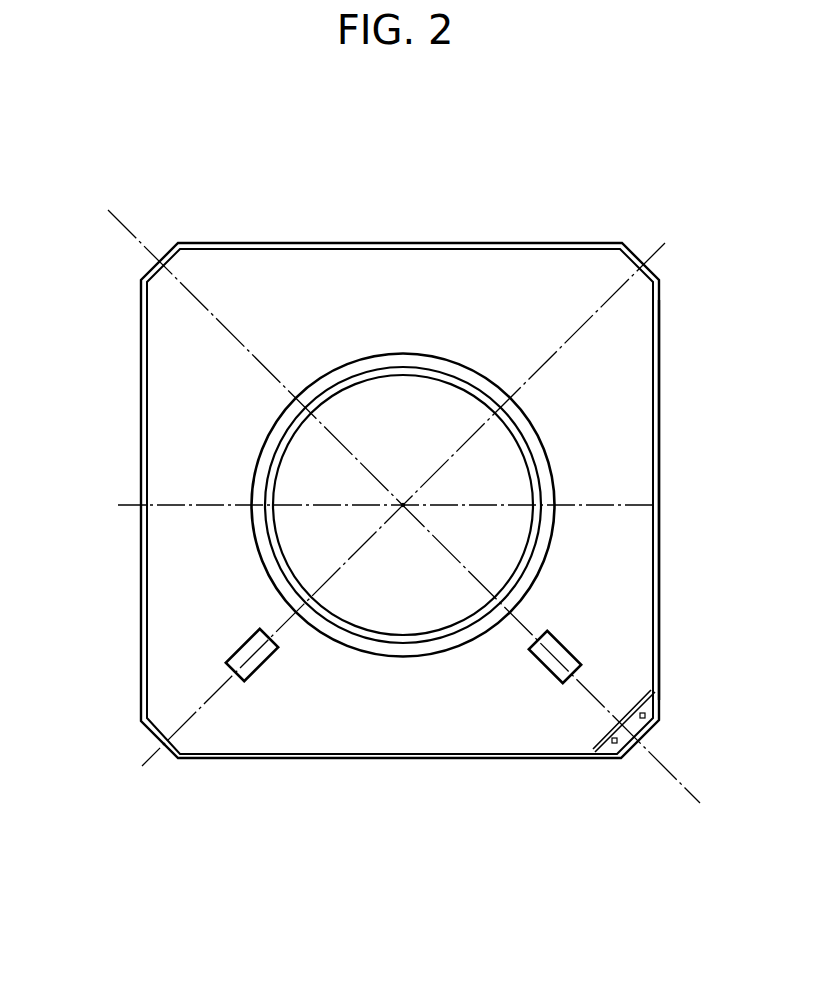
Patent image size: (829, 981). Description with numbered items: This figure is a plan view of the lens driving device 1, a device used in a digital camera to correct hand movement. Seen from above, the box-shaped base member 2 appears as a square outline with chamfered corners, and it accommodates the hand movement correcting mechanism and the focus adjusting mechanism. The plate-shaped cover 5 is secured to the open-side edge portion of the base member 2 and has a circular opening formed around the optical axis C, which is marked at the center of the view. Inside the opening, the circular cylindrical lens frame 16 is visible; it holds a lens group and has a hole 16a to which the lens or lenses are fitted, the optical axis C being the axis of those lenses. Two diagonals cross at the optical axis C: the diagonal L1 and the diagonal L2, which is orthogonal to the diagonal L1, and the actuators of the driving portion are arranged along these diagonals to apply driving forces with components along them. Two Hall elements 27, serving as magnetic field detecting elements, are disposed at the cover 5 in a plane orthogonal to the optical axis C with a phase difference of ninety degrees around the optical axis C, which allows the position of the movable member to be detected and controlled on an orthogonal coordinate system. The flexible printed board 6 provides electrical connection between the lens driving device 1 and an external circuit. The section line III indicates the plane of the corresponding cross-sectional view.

The lens driving device 1 is at (599, 131).
The base member 2 is at (402, 243).
The cover 5 is at (550, 503).
The flexible printed board 6 is at (634, 383).
The lens frame 16 is at (366, 373).
The hole 16a is at (405, 641).
The Hall elements 27 is at (258, 662).
The optical axis C is at (400, 505).
The diagonal L1 is at (222, 318).
The diagonal L2 is at (644, 260).
The section line III- III is at (150, 252).